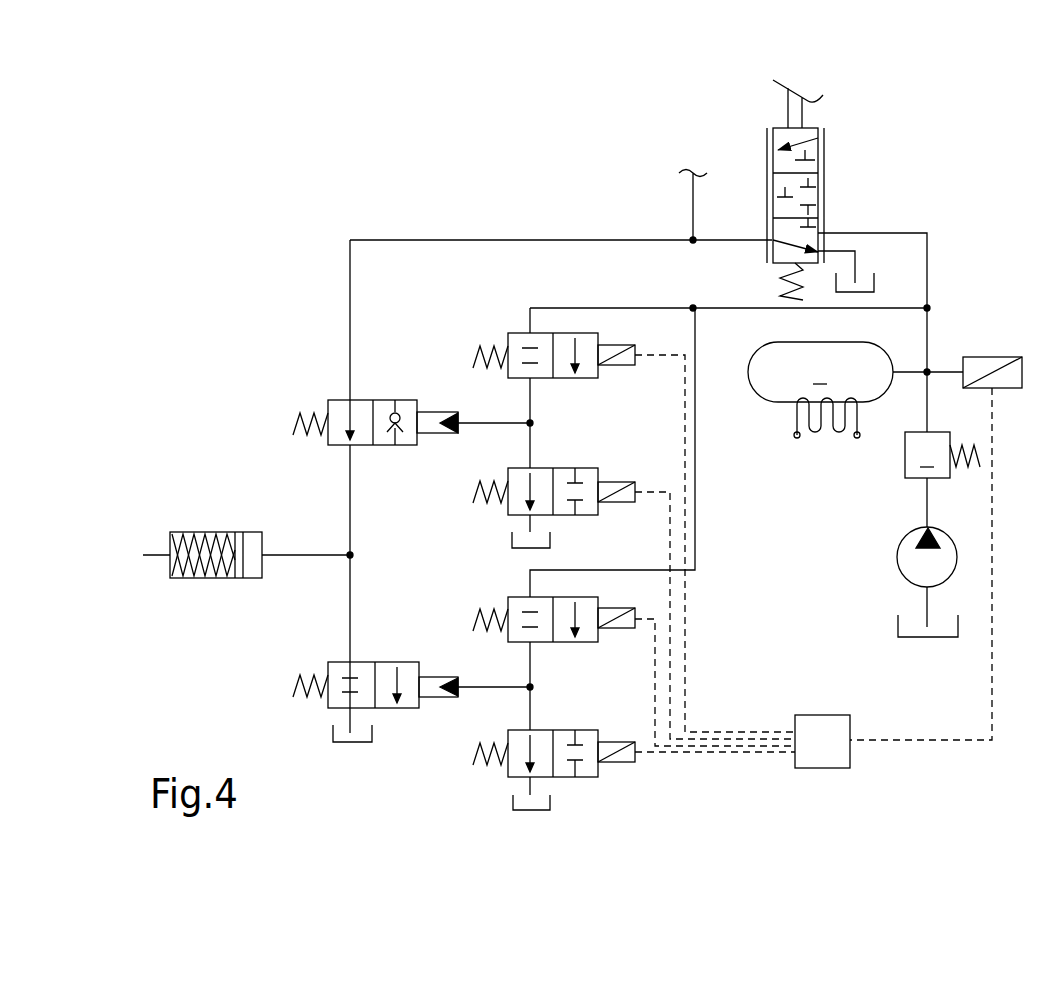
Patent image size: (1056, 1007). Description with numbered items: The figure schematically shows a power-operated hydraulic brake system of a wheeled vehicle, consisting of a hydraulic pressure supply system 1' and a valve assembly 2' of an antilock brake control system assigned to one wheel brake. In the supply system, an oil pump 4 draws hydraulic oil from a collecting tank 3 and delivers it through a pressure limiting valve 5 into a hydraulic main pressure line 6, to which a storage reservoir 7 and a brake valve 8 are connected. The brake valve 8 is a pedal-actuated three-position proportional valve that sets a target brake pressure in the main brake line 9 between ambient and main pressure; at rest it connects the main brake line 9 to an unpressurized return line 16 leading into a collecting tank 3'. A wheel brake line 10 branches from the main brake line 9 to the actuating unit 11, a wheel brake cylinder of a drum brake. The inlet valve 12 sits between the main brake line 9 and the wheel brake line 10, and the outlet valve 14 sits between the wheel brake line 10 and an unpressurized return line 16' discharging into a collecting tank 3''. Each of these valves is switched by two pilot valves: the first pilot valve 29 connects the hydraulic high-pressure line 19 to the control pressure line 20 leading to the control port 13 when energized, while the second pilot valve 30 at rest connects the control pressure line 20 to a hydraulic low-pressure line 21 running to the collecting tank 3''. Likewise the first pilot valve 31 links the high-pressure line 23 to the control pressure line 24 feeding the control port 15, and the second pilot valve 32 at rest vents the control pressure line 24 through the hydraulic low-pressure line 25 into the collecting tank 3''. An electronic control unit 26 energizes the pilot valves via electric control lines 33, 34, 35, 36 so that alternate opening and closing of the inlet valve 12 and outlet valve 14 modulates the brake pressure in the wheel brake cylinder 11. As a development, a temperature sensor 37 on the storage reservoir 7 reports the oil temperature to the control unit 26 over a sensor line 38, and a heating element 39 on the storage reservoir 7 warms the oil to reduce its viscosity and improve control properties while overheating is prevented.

The hydraulic pressure supply system 1' is at (799, 538).
The valve assembly 2' is at (214, 245).
The collecting tank 3 is at (967, 611).
The collecting tank 3' is at (933, 268).
The collecting tank 3'' is at (396, 672).
The oil pump 4 is at (957, 561).
The pressure limiting valve 5 is at (942, 455).
The hydraulic main pressure line 6 is at (930, 343).
The storage reservoir 7 is at (837, 372).
The brake valve 8 is at (838, 192).
The main brake line 9 is at (735, 240).
The wheel brake line 10 is at (302, 555).
The actuating unit 11 is at (210, 532).
The inlet valve 12 is at (320, 400).
The control port 13 is at (432, 412).
The outlet valve 14 is at (320, 660).
The control port 15 is at (432, 677).
The unpressurized return line 16 is at (895, 228).
The unpressurized return line 16' is at (400, 733).
The hydraulic high-pressure line 19 is at (621, 307).
The control pressure line 20 is at (534, 424).
The hydraulic low-pressure line 21 is at (512, 527).
The high-pressure line 23 is at (620, 570).
The control pressure line 24 is at (534, 689).
The hydraulic low-pressure line 25 is at (513, 790).
The electronic control unit 26 is at (851, 752).
The first pilot valve 29 is at (508, 320).
The second pilot valve 30 is at (466, 486).
The first pilot valve 31 is at (469, 592).
The second pilot valve 32 is at (616, 766).
The electric control line 33 is at (685, 522).
The electric control line 34 is at (672, 616).
The electric control line 35 is at (656, 663).
The electric control line 36 is at (757, 754).
The temperature sensor 37 is at (1003, 389).
The sensor line 38 is at (993, 678).
The heating element 39 is at (797, 416).